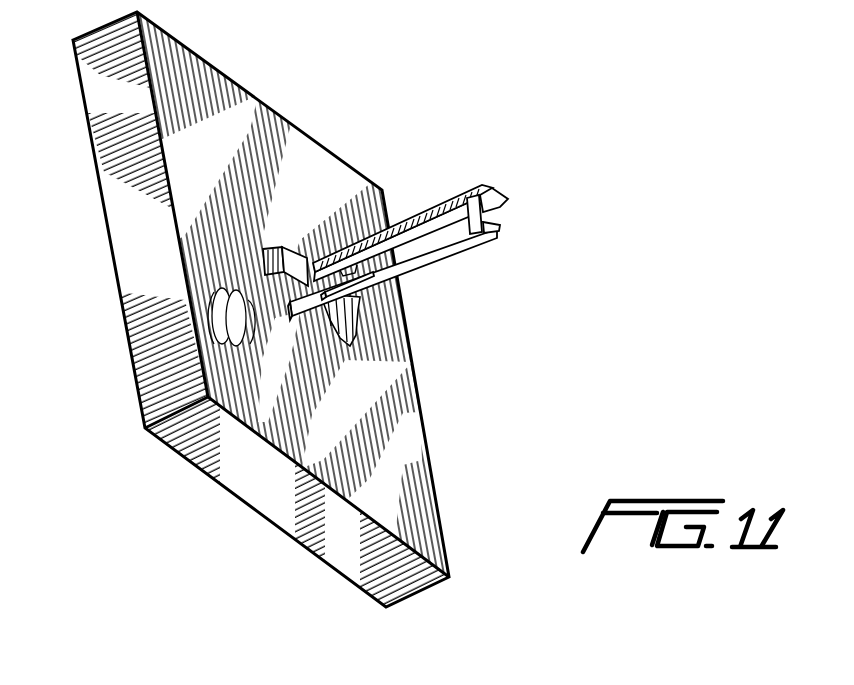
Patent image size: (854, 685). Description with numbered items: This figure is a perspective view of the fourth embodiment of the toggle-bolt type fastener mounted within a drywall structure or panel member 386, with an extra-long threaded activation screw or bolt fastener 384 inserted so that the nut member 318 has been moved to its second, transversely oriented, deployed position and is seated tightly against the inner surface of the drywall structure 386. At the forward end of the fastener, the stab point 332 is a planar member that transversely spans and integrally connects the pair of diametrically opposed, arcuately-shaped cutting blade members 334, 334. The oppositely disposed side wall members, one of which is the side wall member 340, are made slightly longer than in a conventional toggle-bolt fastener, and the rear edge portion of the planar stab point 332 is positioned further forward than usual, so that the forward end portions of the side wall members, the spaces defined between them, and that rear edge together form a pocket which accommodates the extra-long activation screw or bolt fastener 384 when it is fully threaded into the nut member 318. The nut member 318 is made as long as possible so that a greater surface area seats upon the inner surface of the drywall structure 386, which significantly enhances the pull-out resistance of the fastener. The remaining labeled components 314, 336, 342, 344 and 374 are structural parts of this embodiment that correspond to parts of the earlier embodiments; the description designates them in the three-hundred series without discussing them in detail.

The support member 314 is at (242, 308).
The nut member 318 is at (356, 318).
The stab point 332 is at (508, 200).
The cutting blade members 334 is at (493, 193).
The housing block 336 is at (221, 285).
The side wall member 340 is at (430, 250).
The rail 342 is at (348, 224).
The plate 344 is at (360, 313).
The spring clip 374 is at (247, 328).
The extra-long threaded activation screw or bolt fastener 384 is at (413, 213).
The drywall structure or panel member 386 is at (388, 402).